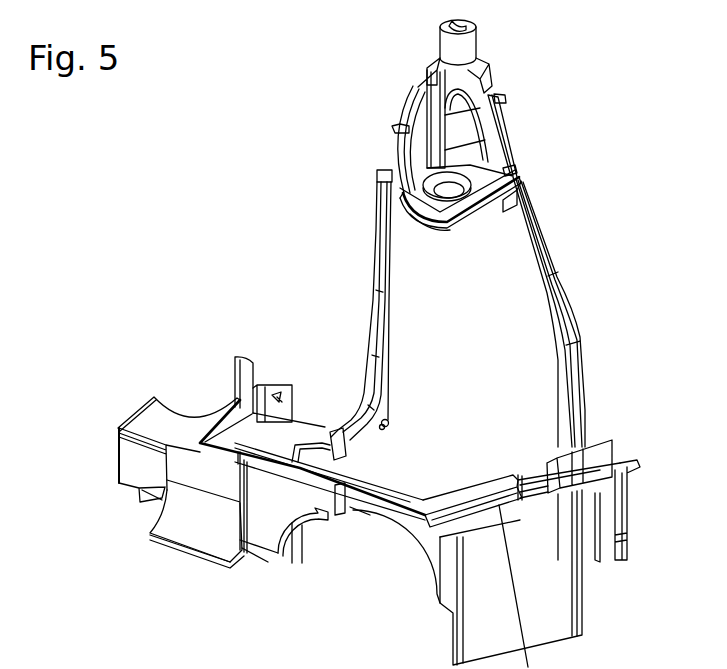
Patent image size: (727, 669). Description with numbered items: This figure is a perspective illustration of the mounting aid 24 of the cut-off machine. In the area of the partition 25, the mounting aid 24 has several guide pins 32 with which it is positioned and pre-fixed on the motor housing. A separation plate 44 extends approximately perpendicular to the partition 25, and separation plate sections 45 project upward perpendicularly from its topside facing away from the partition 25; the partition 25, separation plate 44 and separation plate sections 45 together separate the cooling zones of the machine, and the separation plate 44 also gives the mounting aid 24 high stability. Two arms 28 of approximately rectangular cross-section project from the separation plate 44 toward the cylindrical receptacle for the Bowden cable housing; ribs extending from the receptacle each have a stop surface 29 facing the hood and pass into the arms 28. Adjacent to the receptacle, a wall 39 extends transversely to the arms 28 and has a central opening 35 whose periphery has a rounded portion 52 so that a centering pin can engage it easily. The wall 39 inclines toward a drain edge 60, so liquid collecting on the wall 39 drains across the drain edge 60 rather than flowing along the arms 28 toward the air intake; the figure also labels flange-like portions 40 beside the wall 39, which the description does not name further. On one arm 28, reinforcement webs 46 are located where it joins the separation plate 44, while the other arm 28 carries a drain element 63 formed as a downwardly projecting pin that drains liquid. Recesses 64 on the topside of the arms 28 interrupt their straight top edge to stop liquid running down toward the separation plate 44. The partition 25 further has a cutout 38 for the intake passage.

The mounting aid 24 is at (213, 213).
The partition 25 is at (185, 520).
The arms 28 is at (373, 318).
The stop surface 29 is at (481, 78).
The guide pins 32 is at (624, 545).
The central opening 35 is at (472, 183).
The cutout 38 is at (366, 548).
The wall 39 is at (496, 170).
The flanges 40 is at (394, 162).
The separation plate 44 is at (190, 420).
The separation plate sections 45 is at (247, 356).
The reinforcement webs 46 is at (600, 450).
The rounded portion 52 is at (458, 188).
The drain edge 60 is at (442, 226).
The drain element 63 is at (391, 424).
The recesses 64 is at (498, 96).